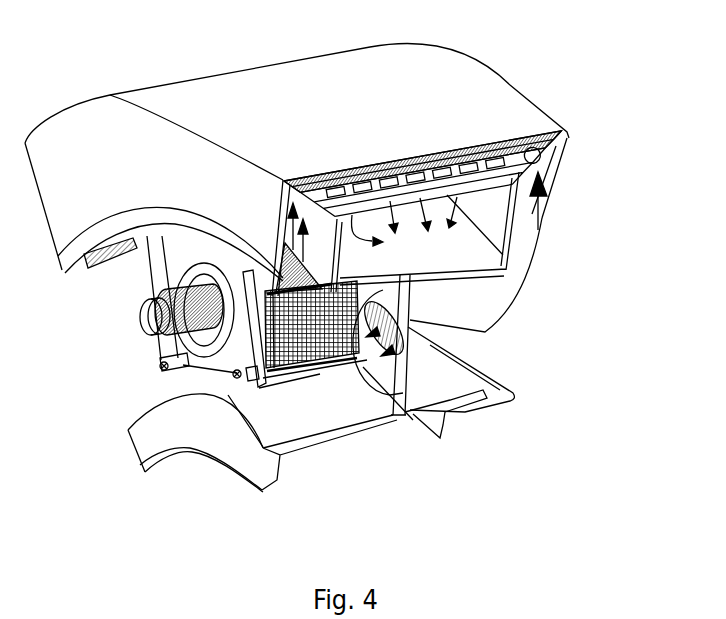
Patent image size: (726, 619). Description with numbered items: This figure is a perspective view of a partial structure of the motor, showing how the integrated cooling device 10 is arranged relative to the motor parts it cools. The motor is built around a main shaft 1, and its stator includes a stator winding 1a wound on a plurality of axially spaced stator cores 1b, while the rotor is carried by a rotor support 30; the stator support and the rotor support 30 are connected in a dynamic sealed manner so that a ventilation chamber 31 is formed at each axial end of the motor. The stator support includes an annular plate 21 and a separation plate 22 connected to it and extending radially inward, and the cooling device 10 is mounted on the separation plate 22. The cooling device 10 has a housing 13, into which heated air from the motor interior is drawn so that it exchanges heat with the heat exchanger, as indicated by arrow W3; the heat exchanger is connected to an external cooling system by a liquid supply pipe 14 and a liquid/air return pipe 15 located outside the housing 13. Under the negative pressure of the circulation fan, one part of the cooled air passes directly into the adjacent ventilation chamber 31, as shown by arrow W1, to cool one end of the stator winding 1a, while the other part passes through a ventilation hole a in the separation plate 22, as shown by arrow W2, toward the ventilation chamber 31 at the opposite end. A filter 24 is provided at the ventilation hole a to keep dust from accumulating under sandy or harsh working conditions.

The main shaft 1 is at (227, 460).
The stator winding 1a is at (447, 150).
The stator cores 1b is at (517, 135).
The cooling device 10 is at (147, 313).
The housing 13 is at (277, 377).
The liquid supply pipe 14 is at (160, 370).
The liquid/air return pipe 15 is at (128, 268).
The annular plate 21 is at (472, 258).
The separation plate 22 is at (415, 288).
The filter 24 is at (463, 410).
The rotor support 30 is at (435, 67).
The ventilation chamber 31 is at (283, 180).
The ventilation hole a is at (412, 418).
The arrow W1 is at (311, 232).
The arrow W2 is at (469, 283).
The arrow W3 is at (404, 227).